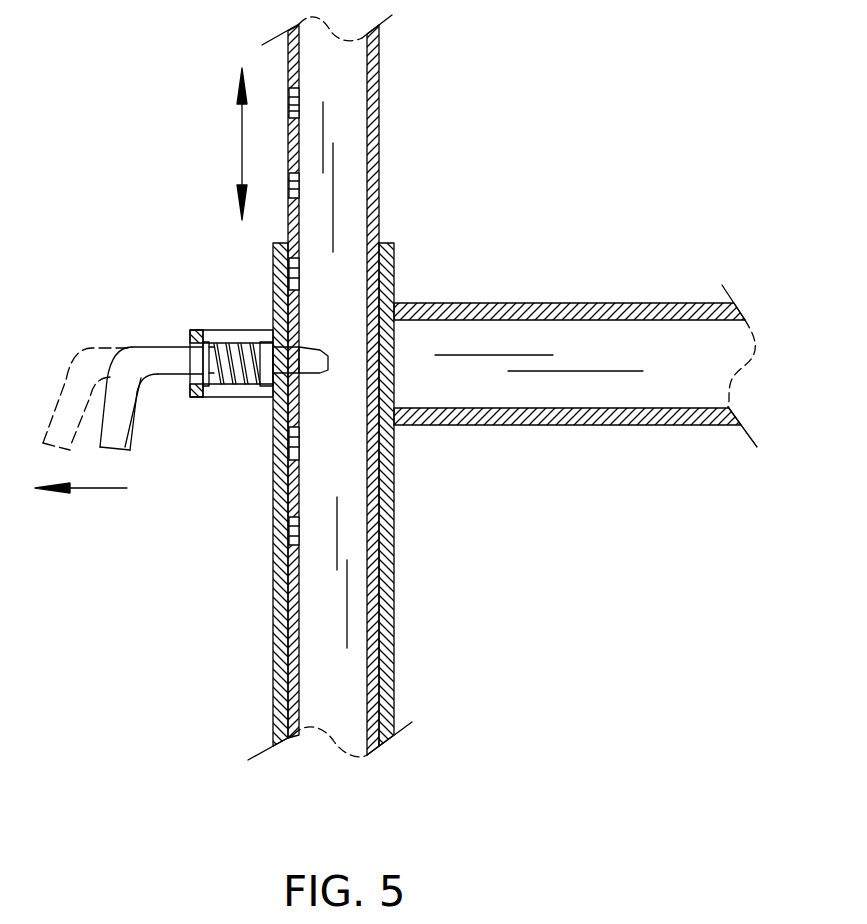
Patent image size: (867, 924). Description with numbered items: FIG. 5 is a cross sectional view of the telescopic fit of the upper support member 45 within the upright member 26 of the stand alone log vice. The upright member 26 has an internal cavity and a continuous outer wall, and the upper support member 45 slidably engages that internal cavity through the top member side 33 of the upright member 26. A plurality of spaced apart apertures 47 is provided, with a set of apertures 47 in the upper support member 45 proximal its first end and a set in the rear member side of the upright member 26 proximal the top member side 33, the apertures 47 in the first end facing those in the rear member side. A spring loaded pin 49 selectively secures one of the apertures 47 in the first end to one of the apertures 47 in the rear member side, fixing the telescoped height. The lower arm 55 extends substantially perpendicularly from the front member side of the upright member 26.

The upright member 26 is at (390, 610).
The top member side 33 is at (395, 243).
The upper support member 45 is at (379, 140).
The apertures 47 is at (293, 90).
The spring loaded pin 49 is at (163, 352).
The lower arm 55 is at (571, 303).